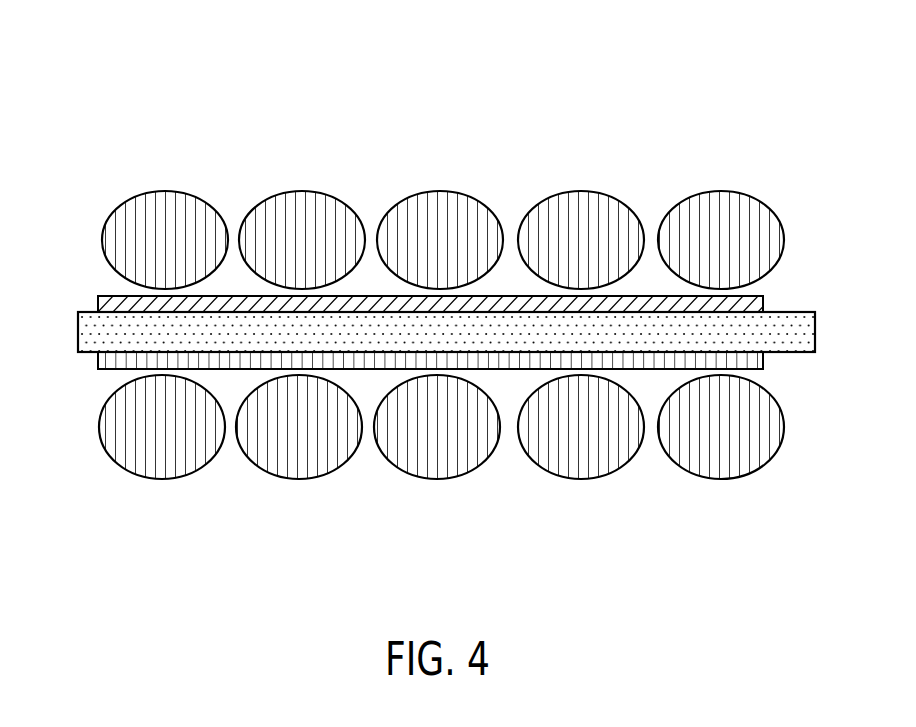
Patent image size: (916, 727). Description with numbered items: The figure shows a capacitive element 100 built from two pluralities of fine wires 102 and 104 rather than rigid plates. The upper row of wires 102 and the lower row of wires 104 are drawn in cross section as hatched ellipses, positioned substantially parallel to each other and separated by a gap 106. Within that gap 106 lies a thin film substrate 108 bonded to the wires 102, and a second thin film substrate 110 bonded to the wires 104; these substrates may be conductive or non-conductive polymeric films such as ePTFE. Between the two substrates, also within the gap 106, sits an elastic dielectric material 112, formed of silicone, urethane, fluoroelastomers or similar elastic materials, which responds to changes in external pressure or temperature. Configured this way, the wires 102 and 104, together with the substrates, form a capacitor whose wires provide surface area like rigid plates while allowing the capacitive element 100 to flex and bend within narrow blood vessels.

The capacitive element 100 is at (70, 97).
The plurality of fine wires 102 is at (758, 170).
The plurality of fine wires 104 is at (758, 495).
The gap 106 is at (847, 291).
The thin film substrate 108 is at (100, 303).
The second thin film substrate 110 is at (100, 358).
The elastic dielectric material 112 is at (88, 340).